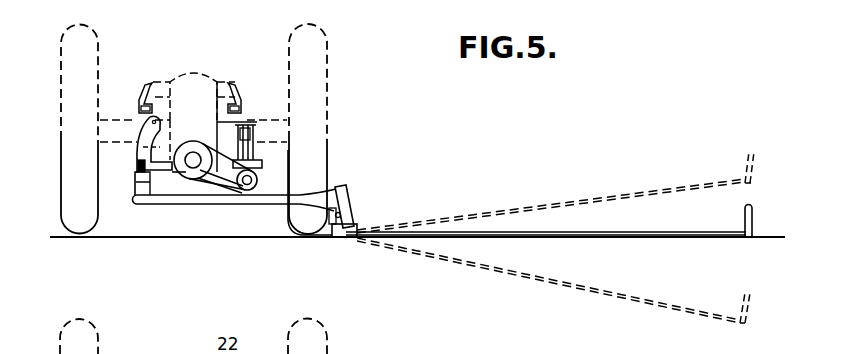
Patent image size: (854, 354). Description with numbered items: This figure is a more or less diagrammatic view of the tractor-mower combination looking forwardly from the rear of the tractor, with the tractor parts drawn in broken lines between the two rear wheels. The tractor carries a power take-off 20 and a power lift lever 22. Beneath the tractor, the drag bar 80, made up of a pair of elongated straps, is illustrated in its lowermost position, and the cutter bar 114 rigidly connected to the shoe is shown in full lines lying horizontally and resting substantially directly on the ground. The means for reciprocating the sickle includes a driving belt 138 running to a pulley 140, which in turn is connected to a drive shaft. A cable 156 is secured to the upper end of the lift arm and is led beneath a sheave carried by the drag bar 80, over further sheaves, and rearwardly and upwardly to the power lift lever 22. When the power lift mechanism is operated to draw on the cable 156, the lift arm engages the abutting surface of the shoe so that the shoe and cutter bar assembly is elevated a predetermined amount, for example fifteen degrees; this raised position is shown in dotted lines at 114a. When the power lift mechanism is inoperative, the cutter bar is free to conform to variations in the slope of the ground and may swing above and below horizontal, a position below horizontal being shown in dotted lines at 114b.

The power take-off 20 is at (185, 179).
The power lift lever 22 is at (240, 88).
The drag bar 80 is at (204, 206).
The cutter bar 114 is at (687, 238).
The cutter bar in elevated position 114a is at (667, 188).
The cutter bar in position below horizontal 114b is at (658, 305).
The driving belt 138 is at (241, 207).
The pulley 140 is at (257, 182).
The cable 156 is at (224, 124).